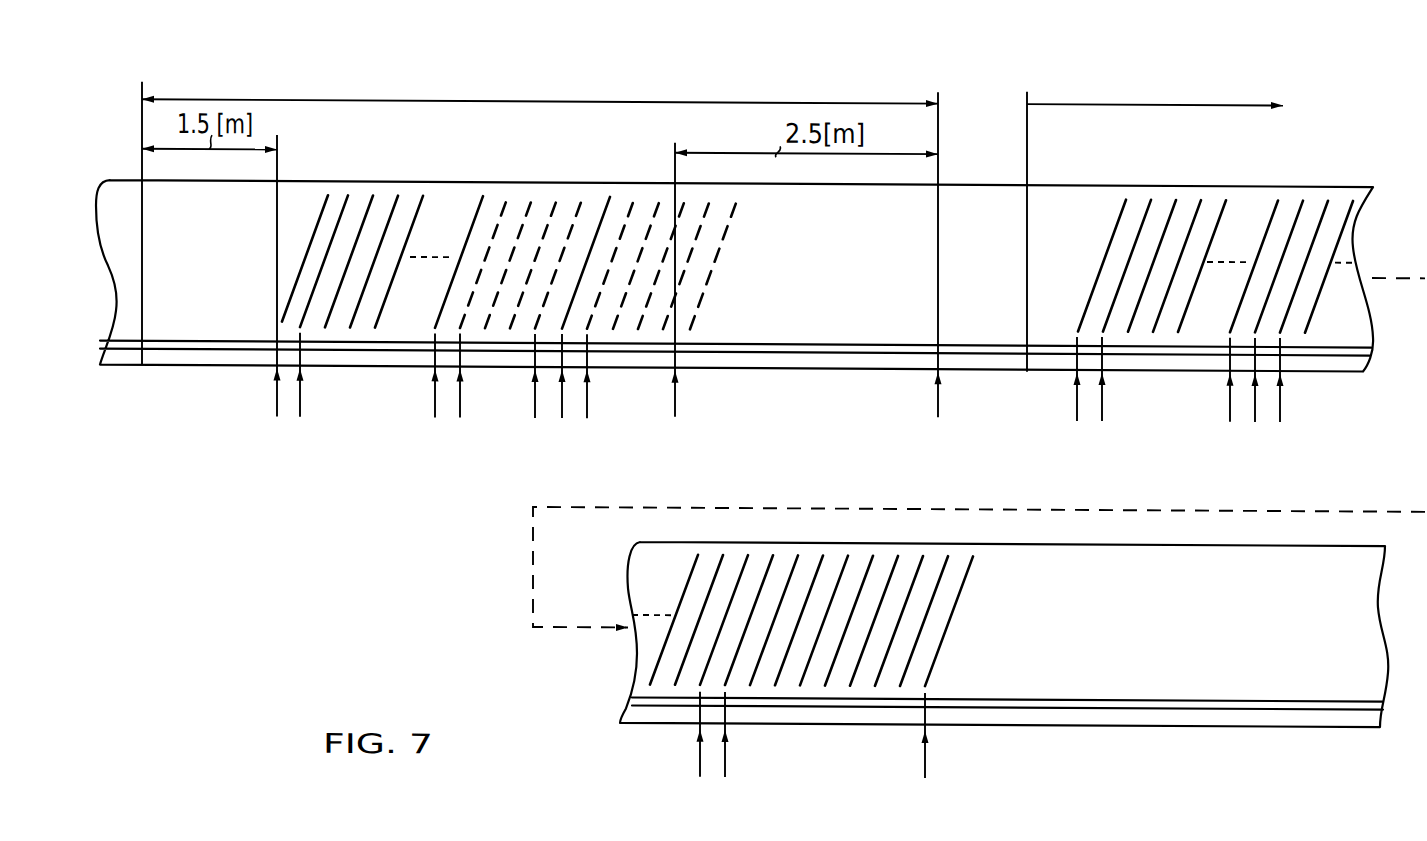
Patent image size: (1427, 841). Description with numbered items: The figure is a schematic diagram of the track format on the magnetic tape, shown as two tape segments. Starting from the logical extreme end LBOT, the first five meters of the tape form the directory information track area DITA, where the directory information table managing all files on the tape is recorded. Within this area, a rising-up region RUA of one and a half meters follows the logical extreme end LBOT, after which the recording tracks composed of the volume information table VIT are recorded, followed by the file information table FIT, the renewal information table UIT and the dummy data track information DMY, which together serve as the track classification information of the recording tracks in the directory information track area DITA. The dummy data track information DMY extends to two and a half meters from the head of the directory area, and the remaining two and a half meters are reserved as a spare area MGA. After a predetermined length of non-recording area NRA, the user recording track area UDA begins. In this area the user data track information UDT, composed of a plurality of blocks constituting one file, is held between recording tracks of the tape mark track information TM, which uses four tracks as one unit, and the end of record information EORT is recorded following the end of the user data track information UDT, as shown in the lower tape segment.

The logical extreme end LBOT is at (162, 209).
The directory information track area DITA is at (530, 100).
The user recording track area UDA is at (1168, 102).
The rising-up region RUA is at (212, 327).
The volume information table VIT is at (291, 294).
The file information table FIT is at (435, 404).
The dummy data track information DMY is at (535, 404).
The renewal information table UIT is at (576, 327).
The spare area MGA is at (938, 404).
The non-recording area NRA is at (990, 327).
The tape mark track information TM is at (1169, 330).
The user data track information UDT is at (1230, 406).
The end of record information EORT is at (925, 756).